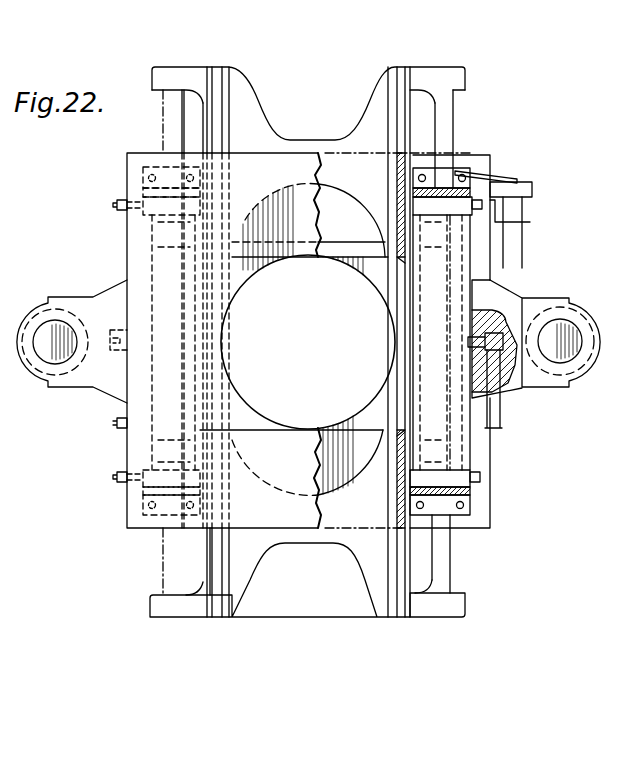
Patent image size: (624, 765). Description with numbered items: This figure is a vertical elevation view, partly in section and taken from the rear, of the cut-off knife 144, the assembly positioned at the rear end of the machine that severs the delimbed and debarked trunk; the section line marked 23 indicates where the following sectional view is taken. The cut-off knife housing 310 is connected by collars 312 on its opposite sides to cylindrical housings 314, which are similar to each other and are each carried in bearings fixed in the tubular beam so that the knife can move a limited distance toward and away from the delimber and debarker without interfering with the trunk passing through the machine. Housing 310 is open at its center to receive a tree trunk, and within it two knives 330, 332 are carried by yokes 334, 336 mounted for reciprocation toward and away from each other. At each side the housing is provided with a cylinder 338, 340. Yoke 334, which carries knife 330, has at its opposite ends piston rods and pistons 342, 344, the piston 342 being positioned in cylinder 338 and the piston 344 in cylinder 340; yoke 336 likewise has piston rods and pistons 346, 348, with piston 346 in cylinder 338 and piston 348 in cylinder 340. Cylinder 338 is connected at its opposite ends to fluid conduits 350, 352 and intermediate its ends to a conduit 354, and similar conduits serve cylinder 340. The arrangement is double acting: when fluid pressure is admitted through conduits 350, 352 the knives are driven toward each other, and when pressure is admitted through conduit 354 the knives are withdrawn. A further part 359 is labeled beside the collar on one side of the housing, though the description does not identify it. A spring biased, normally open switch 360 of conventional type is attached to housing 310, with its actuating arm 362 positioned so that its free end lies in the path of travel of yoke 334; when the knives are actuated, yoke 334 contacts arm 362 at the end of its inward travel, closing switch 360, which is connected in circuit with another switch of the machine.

The cut-off knife housing 310 is at (130, 159).
The collar 312 is at (36, 314).
The cylindrical housing 314 is at (40, 354).
The knife 330 is at (346, 270).
The knife 332 is at (348, 428).
The yoke 334 is at (378, 100).
The yoke 336 is at (376, 606).
The cylinder 338 is at (477, 271).
The cylinder 340 is at (127, 262).
The piston rod and piston 342 is at (455, 108).
The piston rod and piston 344 is at (178, 128).
The piston rod and piston 346 is at (452, 553).
The piston rod and piston 348 is at (166, 563).
The fluid conduit 350 is at (119, 201).
The fluid conduit 352 is at (116, 478).
The conduit 354 is at (117, 423).
The adjusting bolt 359 is at (497, 426).
The switch 360 is at (534, 189).
The actuating arm 362 is at (477, 172).
The cut-off knife 144 is at (541, 121).
The section line 23- 23 is at (327, 606).